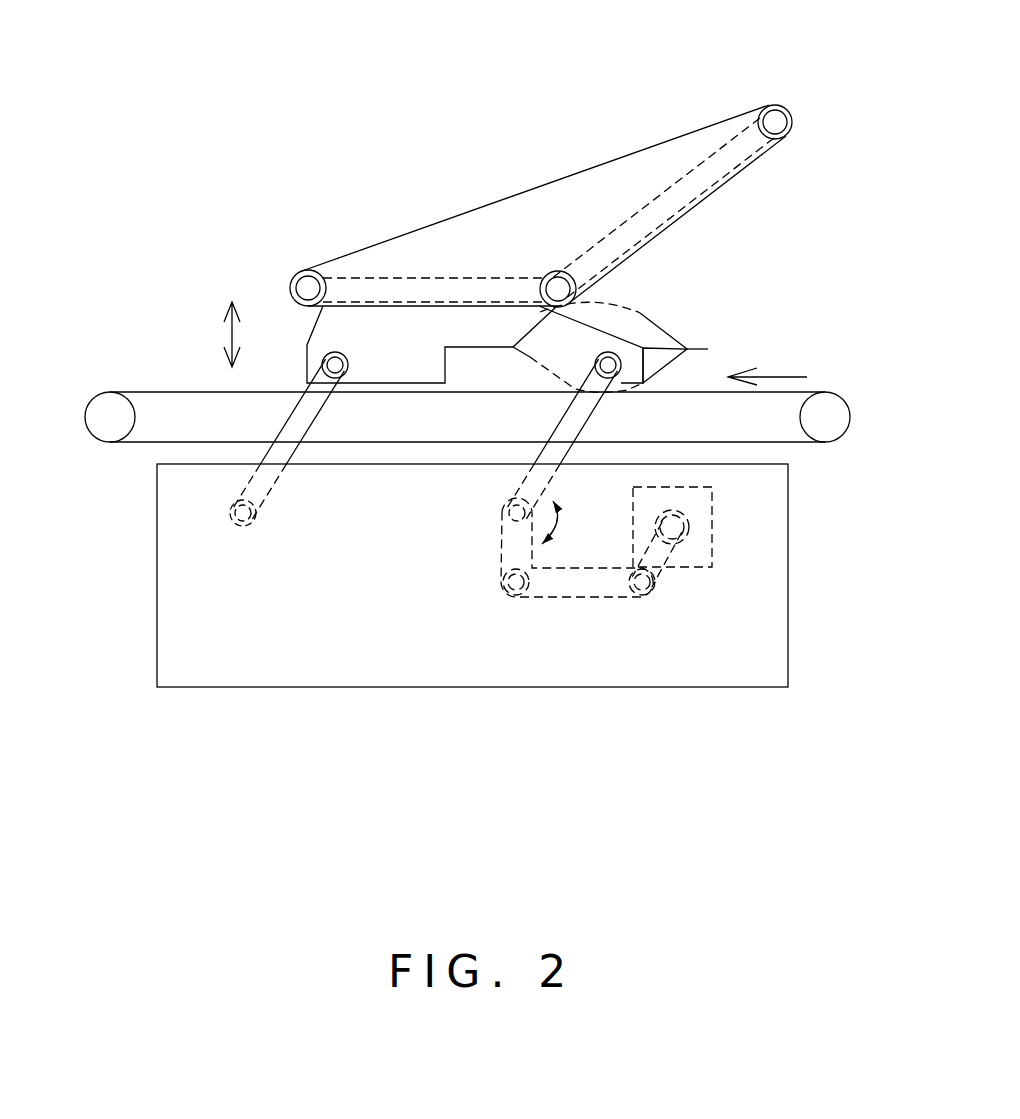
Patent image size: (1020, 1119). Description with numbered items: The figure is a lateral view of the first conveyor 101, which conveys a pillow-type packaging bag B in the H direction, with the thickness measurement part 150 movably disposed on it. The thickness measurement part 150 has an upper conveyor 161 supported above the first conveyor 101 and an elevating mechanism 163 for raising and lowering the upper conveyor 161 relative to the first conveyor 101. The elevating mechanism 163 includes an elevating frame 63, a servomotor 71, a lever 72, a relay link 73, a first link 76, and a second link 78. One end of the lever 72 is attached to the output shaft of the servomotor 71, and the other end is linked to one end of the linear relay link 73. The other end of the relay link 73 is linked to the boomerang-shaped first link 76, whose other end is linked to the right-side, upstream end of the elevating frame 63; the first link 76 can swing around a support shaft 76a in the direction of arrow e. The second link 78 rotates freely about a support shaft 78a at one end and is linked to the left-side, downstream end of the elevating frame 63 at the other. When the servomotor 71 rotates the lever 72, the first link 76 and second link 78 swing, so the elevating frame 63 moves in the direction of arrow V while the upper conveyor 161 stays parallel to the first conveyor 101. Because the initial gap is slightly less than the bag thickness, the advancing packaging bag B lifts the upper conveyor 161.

The thickness measurement part 150 is at (496, 151).
The upper conveyor 161 is at (700, 225).
The elevating frame 63 is at (654, 343).
The pillow-type packaging bag B is at (657, 315).
The arrow V direction V is at (245, 334).
The H direction H is at (780, 379).
The first conveyor 101 is at (175, 371).
The elevating mechanism 163 is at (220, 689).
The second link 78 is at (241, 484).
The support shaft 78a is at (228, 516).
The first link 76 is at (515, 483).
The support shaft 76a is at (501, 512).
The relay link 73 is at (578, 600).
The arrow e direction e is at (559, 522).
The lever 72 is at (675, 558).
The servomotor 71 is at (715, 535).